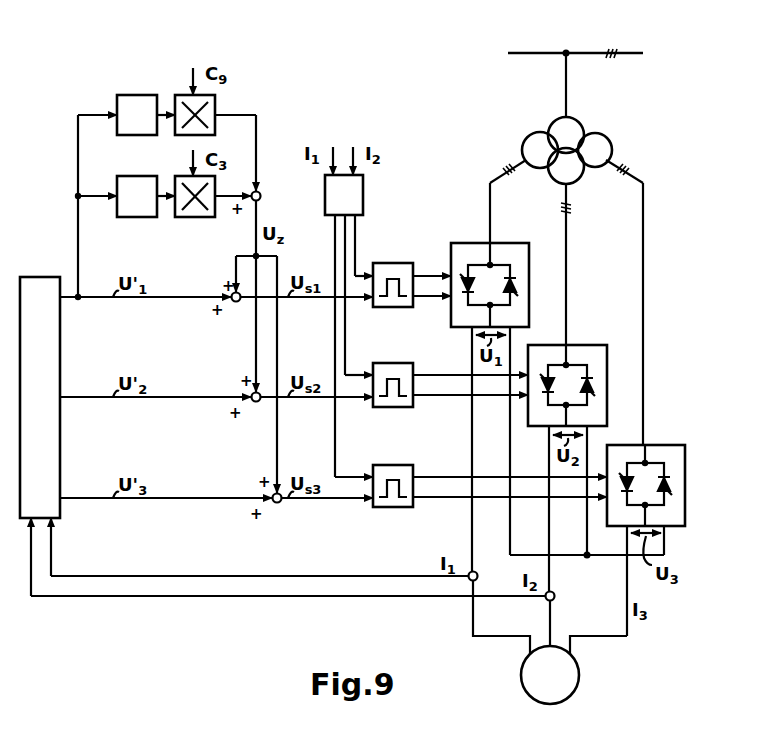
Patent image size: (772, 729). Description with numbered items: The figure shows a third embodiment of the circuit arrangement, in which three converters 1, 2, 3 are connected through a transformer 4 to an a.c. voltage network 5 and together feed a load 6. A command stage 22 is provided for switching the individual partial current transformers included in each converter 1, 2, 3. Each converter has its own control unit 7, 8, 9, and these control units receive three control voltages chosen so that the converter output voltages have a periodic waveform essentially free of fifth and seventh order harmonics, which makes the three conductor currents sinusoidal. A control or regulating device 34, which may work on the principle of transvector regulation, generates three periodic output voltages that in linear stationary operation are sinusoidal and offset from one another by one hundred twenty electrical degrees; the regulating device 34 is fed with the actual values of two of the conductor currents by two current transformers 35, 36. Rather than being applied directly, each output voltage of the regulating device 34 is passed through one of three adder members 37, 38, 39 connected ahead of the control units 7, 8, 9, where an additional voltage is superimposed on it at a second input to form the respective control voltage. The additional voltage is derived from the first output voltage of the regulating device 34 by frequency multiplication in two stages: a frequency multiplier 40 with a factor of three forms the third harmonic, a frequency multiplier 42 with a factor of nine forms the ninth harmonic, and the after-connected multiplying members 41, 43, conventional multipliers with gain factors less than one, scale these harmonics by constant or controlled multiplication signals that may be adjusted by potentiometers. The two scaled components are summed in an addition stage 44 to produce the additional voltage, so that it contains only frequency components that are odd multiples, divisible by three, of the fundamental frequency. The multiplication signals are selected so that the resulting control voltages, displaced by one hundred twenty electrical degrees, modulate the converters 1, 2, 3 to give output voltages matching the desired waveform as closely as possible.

The converter 1 is at (507, 243).
The converter 2 is at (585, 345).
The converter 3 is at (662, 445).
The transformer 4 is at (578, 128).
The a.c. voltage network 5 is at (525, 53).
The load 6 is at (579, 676).
The control unit 7 is at (390, 263).
The control unit 8 is at (390, 363).
The control unit 9 is at (390, 465).
The command stage 22 is at (363, 193).
The control or regulating device 34 is at (60, 350).
The current transformer 35 is at (478, 574).
The current transformer 36 is at (554, 593).
The adder member 37 is at (237, 302).
The adder member 38 is at (257, 402).
The adder member 39 is at (278, 503).
The frequency multiplier 40 is at (133, 176).
The multiplying member 41 is at (186, 176).
The frequency multiplier 42 is at (133, 95).
The multiplying member 43 is at (185, 95).
The addition stage 44 is at (261, 196).